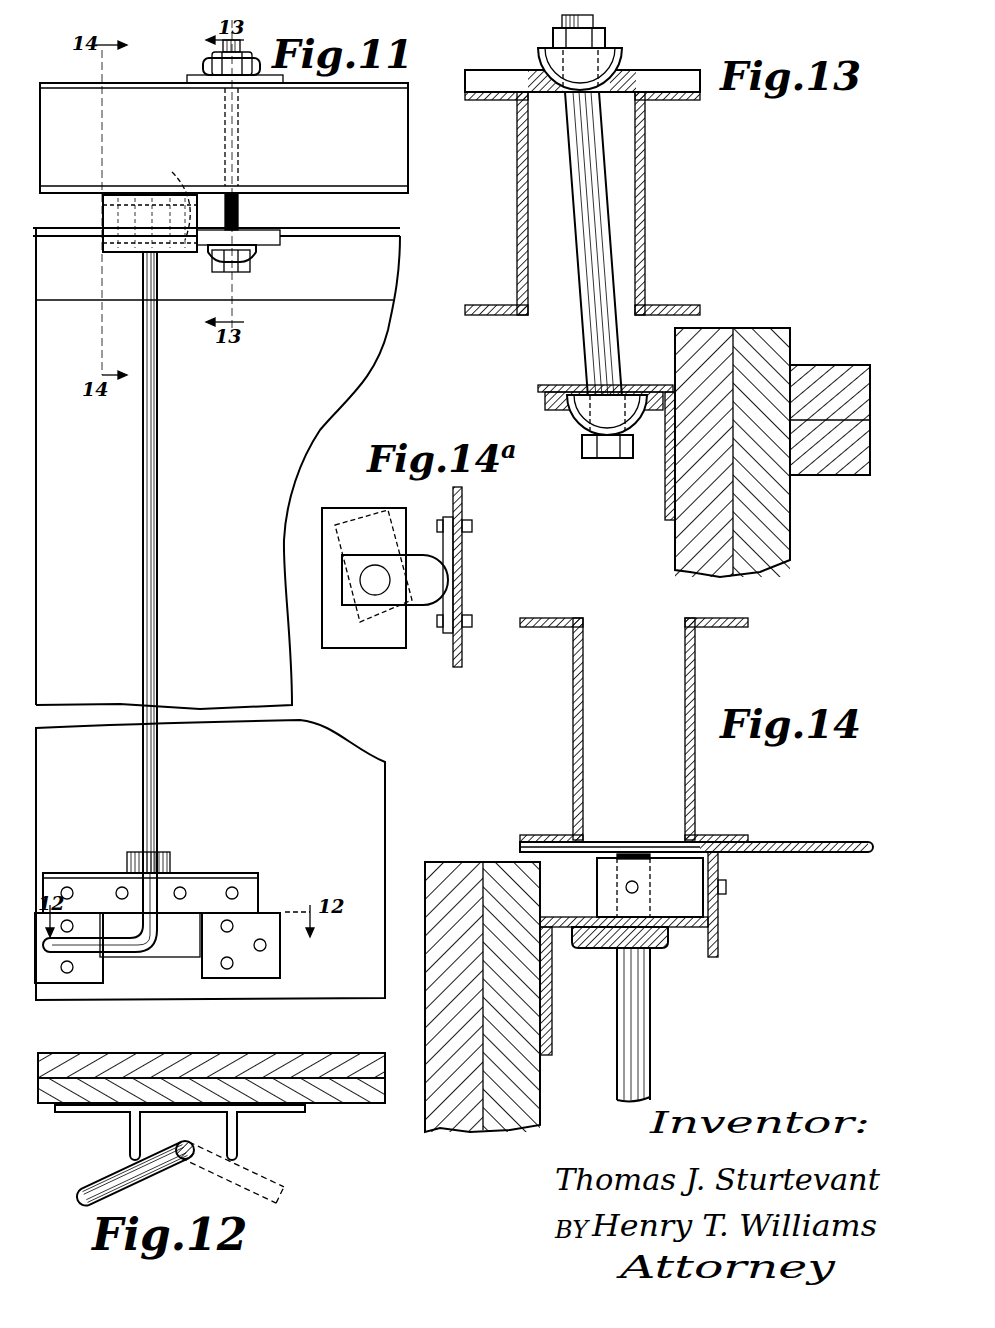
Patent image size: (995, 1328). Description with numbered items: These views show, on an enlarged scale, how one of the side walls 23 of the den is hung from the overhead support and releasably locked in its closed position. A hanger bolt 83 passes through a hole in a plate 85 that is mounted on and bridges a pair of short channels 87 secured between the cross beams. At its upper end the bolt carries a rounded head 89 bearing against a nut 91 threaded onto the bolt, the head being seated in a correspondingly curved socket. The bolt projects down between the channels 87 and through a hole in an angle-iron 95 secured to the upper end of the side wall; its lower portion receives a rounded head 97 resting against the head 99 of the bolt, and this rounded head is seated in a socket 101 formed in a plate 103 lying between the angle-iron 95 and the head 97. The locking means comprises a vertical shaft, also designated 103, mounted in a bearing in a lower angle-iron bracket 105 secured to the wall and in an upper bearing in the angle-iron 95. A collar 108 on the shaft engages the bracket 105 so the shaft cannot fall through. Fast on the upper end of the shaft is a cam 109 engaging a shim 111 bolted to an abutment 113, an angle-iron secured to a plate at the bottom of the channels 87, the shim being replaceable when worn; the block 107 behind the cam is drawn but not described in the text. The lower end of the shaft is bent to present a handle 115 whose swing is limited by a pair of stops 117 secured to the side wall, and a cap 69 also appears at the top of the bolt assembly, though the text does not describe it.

In FIG. 11, the side wall 23 is at (365, 793).
In FIG. 12, the side wall 23 is at (345, 1053).
In FIG. 13, the side wall 23 is at (673, 548).
In FIG. 11, the cap 69 is at (203, 66).
In FIG. 11, the bolt 83 is at (240, 205).
In FIG. 13, the bolt 83 is at (615, 235).
In FIG. 11, the plate 85 is at (278, 83).
In FIG. 13, the plate 85 is at (665, 72).
In FIG. 11, the short channels 87 is at (408, 155).
In FIG. 13, the short channels 87 is at (517, 168).
In FIG. 14, the short channels 87 is at (573, 738).
In FIG. 13, the rounded head 89 is at (618, 50).
In FIG. 11, the nut 91 is at (212, 48).
In FIG. 13, the nut 91 is at (553, 33).
In FIG. 11, the angle-iron 95 is at (277, 287).
In FIG. 13, the angle-iron 95 is at (560, 385).
In FIG. 14, the angle-iron 95 is at (552, 1045).
In FIG. 11, the rounded head 97 is at (256, 252).
In FIG. 13, the rounded head 97 is at (567, 412).
In FIG. 11, the head of the bolt 99 is at (214, 266).
In FIG. 13, the head of the bolt 99 is at (583, 450).
In FIG. 13, the socket 101 is at (627, 418).
In FIG. 11, the plate 103 is at (262, 236).
In FIG. 13, the plate 103 is at (643, 390).
In FIG. 14, the plate 103 is at (617, 985).
In FIG. 14A, the plate 103 is at (372, 566).
In FIG. 11, the lower angle-iron bracket 105 is at (200, 875).
In FIG. 14, the block 107 is at (597, 915).
In FIG. 14A, the block 107 is at (368, 650).
In FIG. 11, the collar 108 is at (165, 194).
In FIG. 11, the cam 109 is at (172, 862).
In FIG. 14, the cam 109 is at (690, 900).
In FIG. 14A, the cam 109 is at (428, 580).
In FIG. 14, the shim 111 is at (718, 870).
In FIG. 14A, the shim 111 is at (453, 560).
In FIG. 11, the abutment 113 is at (103, 212).
In FIG. 14, the abutment 113 is at (718, 935).
In FIG. 14A, the abutment 113 is at (462, 612).
In FIG. 11, the handle 115 is at (120, 955).
In FIG. 12, the handle 115 is at (118, 1175).
In FIG. 11, the stops 117 is at (210, 960).
In FIG. 12, the stops 117 is at (228, 1125).